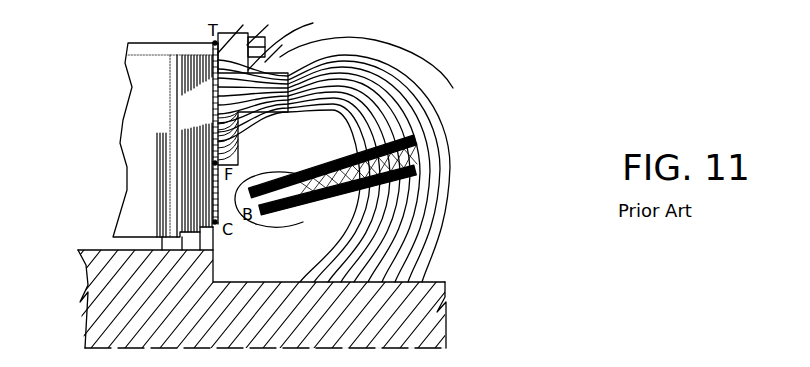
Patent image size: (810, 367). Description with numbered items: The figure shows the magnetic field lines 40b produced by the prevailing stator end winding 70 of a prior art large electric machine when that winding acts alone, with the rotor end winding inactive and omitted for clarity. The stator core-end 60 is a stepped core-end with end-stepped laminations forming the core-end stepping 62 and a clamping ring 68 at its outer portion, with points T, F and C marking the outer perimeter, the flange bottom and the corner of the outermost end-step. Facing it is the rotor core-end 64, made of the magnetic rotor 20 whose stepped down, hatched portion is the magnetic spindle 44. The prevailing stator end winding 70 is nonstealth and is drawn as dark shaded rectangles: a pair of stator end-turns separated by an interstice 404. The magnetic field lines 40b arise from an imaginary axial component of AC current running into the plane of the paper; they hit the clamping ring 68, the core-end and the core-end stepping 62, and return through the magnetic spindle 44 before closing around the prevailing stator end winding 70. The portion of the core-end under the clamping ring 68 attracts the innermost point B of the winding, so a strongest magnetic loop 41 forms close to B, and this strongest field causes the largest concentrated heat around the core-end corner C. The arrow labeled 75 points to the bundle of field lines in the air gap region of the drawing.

The stator core-end 60 is at (105, 160).
The end-stepped laminations 62 is at (218, 227).
The clamping ring 68 is at (253, 95).
The magnetic field lines 40b is at (450, 117).
The magnetic flux lines 75 is at (442, 242).
The strongest magnetic loop 41 is at (261, 233).
The interstice 404 is at (413, 160).
The prevailing stator end winding 70 is at (417, 142).
The magnetic rotor 20 is at (100, 249).
The magnetic spindle 44 is at (438, 310).
The rotor core-end 64 is at (75, 277).